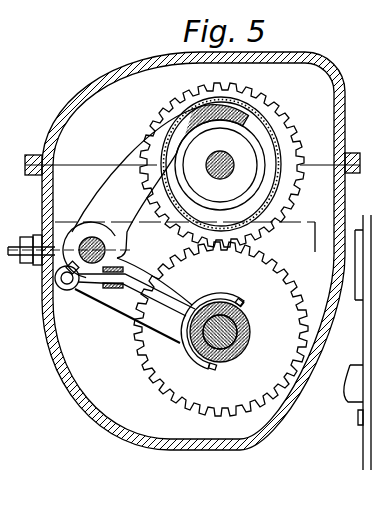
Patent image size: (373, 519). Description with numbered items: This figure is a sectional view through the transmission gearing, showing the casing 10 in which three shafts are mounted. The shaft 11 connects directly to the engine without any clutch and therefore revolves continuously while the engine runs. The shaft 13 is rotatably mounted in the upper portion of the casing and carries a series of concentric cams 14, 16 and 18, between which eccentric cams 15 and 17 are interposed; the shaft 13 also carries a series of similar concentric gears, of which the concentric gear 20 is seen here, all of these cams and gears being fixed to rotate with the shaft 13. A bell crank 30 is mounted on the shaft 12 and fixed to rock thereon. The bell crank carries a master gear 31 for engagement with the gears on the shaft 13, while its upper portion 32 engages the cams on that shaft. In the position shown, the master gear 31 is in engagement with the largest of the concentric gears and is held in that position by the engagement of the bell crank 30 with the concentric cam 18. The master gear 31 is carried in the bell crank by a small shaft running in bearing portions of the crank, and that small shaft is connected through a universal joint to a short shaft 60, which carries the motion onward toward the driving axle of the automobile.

The casing 10 is at (108, 68).
The shaft 11 is at (226, 362).
The shaft 12 is at (120, 249).
The shaft 13 is at (222, 185).
The concentric cam 14 is at (290, 225).
The eccentric cam 15 is at (274, 147).
The concentric cam 16 is at (268, 182).
The eccentric cam 17 is at (250, 136).
The concentric cam 18 is at (213, 142).
The concentric gear 20 is at (168, 104).
The bell crank 30 is at (113, 309).
The master gear 31 is at (204, 337).
The upper portion of bell crank 32 is at (163, 135).
The short shaft 60 is at (347, 400).